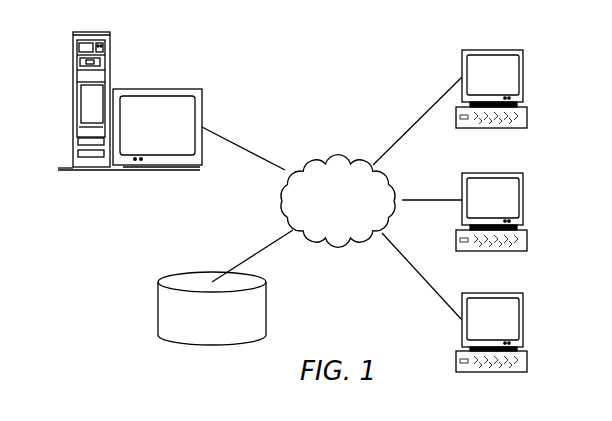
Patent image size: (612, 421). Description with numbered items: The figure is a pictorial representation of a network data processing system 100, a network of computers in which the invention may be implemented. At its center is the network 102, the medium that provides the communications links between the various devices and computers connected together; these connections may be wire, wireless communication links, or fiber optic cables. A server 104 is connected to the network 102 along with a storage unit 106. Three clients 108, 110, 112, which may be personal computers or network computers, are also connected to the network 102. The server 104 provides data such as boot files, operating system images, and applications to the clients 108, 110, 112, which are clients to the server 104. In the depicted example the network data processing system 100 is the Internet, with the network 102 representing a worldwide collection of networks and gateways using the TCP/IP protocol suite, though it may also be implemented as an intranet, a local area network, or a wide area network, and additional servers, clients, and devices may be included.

The network data processing system 100 is at (389, 58).
The network 102 is at (316, 156).
The server 104 is at (72, 102).
The storage unit 106 is at (158, 309).
The client 108 is at (523, 76).
The client 110 is at (523, 199).
The client 112 is at (523, 322).